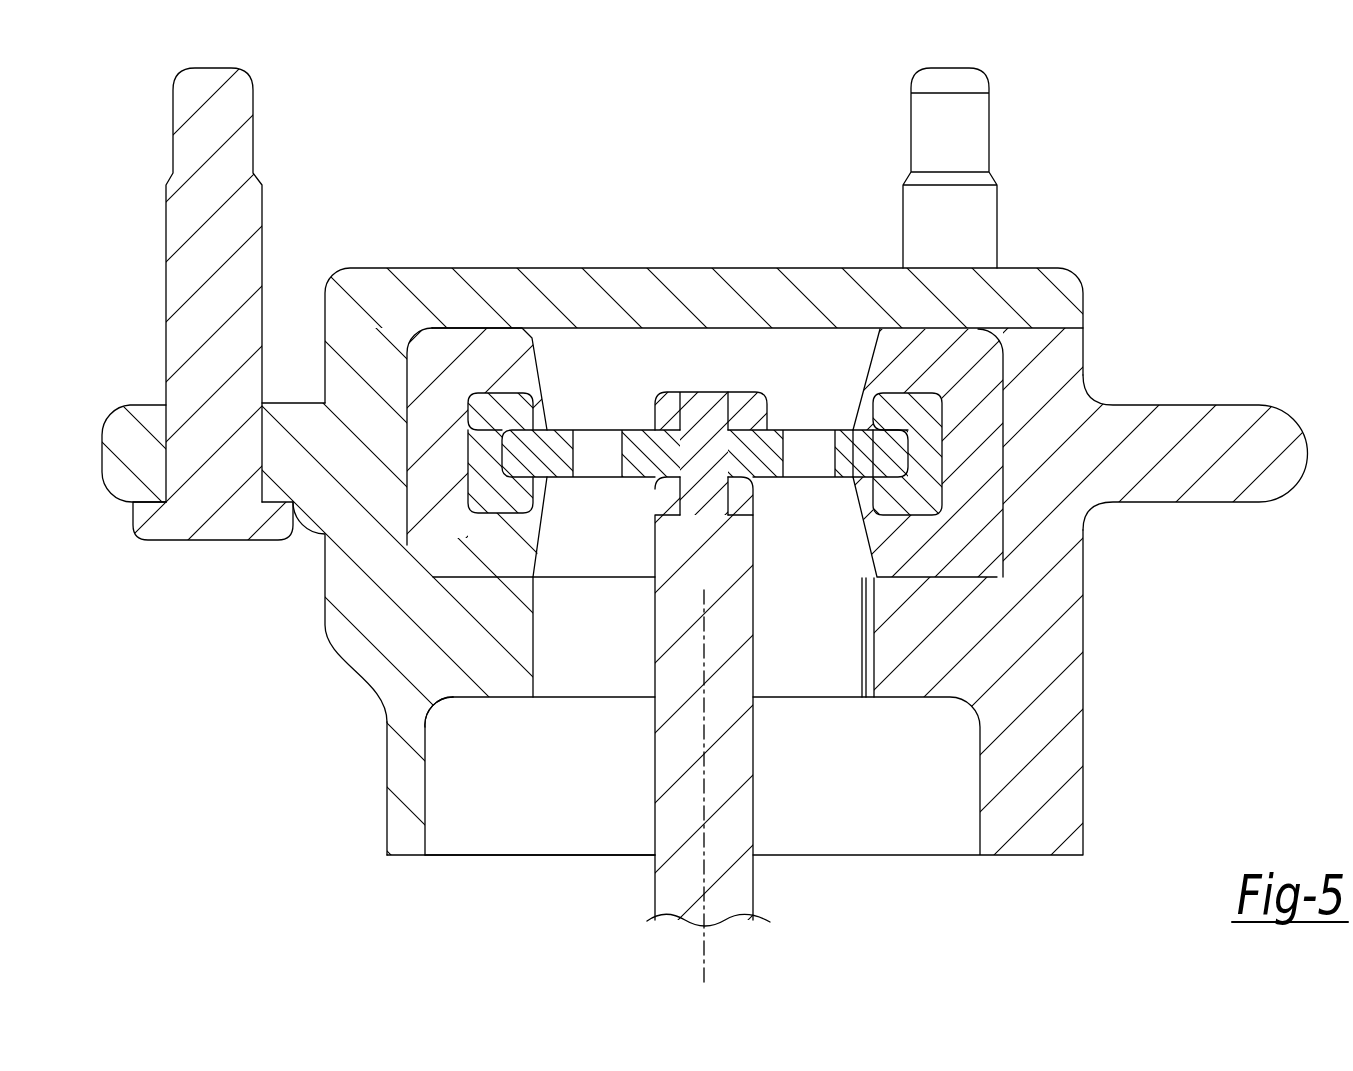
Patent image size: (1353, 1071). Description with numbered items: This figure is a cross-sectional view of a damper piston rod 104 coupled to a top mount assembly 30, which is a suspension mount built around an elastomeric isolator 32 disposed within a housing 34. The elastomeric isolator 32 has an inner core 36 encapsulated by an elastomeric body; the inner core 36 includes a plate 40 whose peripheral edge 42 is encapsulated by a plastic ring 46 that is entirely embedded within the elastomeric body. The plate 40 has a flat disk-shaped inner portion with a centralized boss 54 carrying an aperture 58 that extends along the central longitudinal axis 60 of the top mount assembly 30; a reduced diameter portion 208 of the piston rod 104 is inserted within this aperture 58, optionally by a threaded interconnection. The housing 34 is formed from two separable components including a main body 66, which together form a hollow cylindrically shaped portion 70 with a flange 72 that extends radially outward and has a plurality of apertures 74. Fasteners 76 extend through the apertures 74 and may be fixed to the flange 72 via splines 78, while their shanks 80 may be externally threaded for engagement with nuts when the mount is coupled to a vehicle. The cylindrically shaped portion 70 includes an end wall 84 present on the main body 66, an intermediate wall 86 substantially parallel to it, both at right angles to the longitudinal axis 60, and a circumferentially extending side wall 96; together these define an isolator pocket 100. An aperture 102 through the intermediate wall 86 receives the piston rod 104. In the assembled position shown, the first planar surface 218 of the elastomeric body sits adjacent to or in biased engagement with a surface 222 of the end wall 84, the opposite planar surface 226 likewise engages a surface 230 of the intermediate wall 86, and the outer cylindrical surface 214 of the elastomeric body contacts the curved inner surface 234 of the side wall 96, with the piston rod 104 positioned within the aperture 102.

The top mount assembly 30 is at (249, 699).
The elastomeric isolator 32 is at (861, 542).
The housing 34 is at (1097, 310).
The inner core 36 is at (537, 499).
The plate 40 is at (777, 483).
The peripheral edge 42 is at (910, 453).
The plastic ring 46 is at (480, 505).
The centralized boss 54 is at (742, 420).
The aperture 58 is at (720, 425).
The central longitudinal axis 60 is at (705, 880).
The main body 66 is at (1087, 689).
The cylindrically shaped portion 70 is at (357, 410).
The flange 72 is at (1227, 427).
The apertures 74 is at (262, 432).
The fasteners 76 is at (185, 288).
The splines 78 is at (163, 455).
The shanks 80 is at (985, 215).
The end wall 84 is at (683, 285).
The intermediate wall 86 is at (480, 565).
The side wall 96 is at (330, 465).
The isolator pocket 100 is at (578, 362).
The aperture 102 is at (537, 637).
The piston rod 104 is at (733, 827).
The reduced diameter portion 208 is at (680, 447).
The outer cylindrical surface 214 is at (1005, 426).
The first planar surface 218 is at (914, 332).
The surface 222 is at (827, 347).
The opposite planar surface 226 is at (945, 590).
The surface 230 is at (507, 647).
The curved inner surface 234 is at (405, 492).